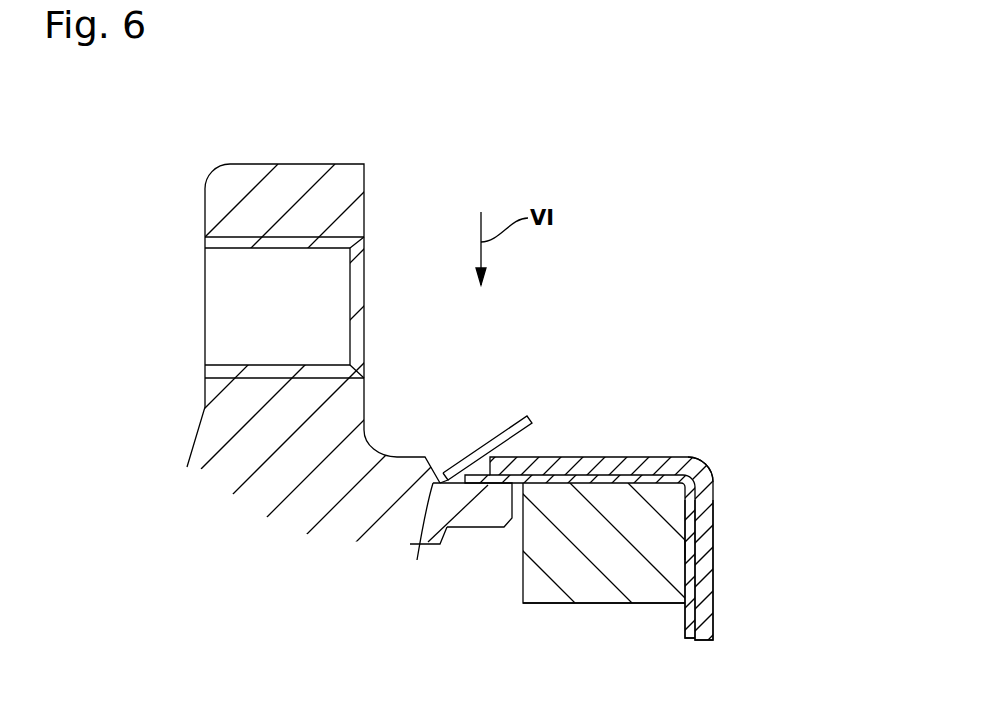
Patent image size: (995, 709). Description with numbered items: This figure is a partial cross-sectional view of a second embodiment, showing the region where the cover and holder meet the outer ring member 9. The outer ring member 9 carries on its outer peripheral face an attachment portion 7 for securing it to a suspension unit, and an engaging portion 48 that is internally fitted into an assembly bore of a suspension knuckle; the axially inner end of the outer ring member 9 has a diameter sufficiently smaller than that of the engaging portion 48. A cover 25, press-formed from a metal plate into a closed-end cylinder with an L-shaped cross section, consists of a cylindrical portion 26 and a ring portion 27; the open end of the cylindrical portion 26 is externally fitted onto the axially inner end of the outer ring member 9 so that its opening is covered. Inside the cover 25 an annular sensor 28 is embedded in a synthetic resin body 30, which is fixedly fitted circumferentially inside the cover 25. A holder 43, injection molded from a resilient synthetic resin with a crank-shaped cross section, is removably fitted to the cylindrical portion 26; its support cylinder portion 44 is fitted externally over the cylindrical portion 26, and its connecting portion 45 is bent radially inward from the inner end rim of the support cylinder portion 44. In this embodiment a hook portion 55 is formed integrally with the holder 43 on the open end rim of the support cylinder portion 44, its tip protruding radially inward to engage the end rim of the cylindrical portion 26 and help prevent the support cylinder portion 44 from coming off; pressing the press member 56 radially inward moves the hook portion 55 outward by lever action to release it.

The attachment portion 7 is at (299, 177).
The outer ring member 9 is at (362, 400).
The engaging portion 48 is at (406, 453).
The press member 56 is at (518, 408).
The hook portion 55 is at (430, 522).
The support cylinder portion 44 is at (605, 457).
The cylindrical portion 26 is at (555, 458).
The cover 25 is at (632, 457).
The holder 43 is at (703, 573).
The connecting portion 45 is at (707, 590).
The sensor 28 is at (647, 532).
The ring portion 27 is at (688, 548).
The synthetic resin body 30 is at (605, 558).